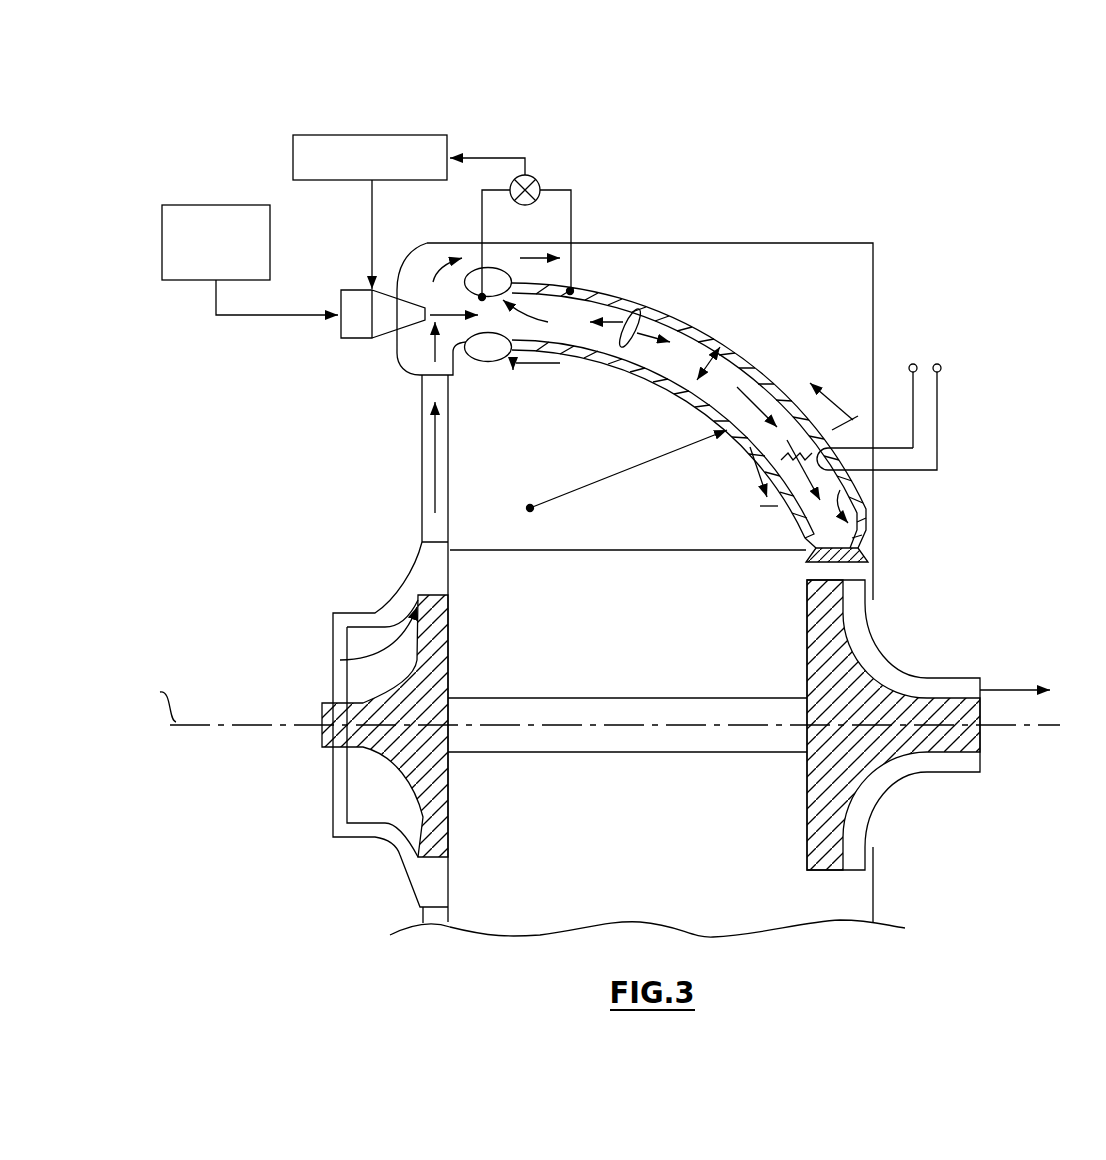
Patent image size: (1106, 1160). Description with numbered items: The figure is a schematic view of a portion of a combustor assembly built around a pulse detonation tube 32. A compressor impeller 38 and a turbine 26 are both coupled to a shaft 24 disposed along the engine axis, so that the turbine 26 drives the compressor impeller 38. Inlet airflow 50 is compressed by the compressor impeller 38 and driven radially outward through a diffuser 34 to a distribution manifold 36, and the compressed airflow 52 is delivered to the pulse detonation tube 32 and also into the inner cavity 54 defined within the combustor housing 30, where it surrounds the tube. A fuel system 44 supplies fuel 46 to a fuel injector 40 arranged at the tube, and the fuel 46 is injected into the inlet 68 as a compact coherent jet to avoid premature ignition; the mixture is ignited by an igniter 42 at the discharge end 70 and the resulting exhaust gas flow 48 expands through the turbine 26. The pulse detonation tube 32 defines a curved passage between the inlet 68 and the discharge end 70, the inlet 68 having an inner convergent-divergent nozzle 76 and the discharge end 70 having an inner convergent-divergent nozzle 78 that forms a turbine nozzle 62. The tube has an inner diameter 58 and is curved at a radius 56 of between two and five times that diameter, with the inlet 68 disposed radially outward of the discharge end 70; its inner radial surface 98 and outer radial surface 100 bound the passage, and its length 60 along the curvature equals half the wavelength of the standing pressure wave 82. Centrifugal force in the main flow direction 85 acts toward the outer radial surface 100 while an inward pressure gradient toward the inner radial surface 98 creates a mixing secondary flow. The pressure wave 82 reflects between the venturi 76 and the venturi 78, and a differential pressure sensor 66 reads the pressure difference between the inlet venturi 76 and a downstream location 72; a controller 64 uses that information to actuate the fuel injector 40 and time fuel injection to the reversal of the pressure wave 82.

The shaft 24 is at (640, 738).
The turbine 26 is at (830, 777).
The combustor housing 30 is at (790, 243).
The pulse detonation tube 32 is at (765, 353).
The diffuser 34 is at (445, 450).
The manifold 36 is at (400, 272).
The compressor impeller 38 is at (447, 800).
The fuel injector 40 is at (385, 330).
The igniter 42 is at (936, 455).
The fuel system 44 is at (205, 205).
The fuel 46 is at (214, 298).
The exhaust gas flow 48 is at (1003, 689).
The inlet airflow 50 is at (312, 640).
The compressed airflow 52 is at (424, 438).
The inner cavity 54 is at (790, 305).
The radius 56 is at (650, 470).
The inner diameter 58 is at (698, 376).
The length 60 is at (600, 364).
The turbine nozzle 62 is at (806, 543).
The controller 64 is at (405, 135).
The differential pressure sensor 66 is at (545, 182).
The inlet 68 is at (426, 349).
The discharge end 70 is at (800, 527).
The downstream location 72 is at (571, 292).
The inlet convergent-divergent nozzle 76 is at (540, 319).
The discharge convergent-divergent nozzle 78 is at (858, 487).
The standing pressure wave 82 is at (617, 306).
The main flow direction 85 is at (782, 395).
The inner radial surface 98 is at (655, 380).
The outer radial surface 100 is at (727, 330).